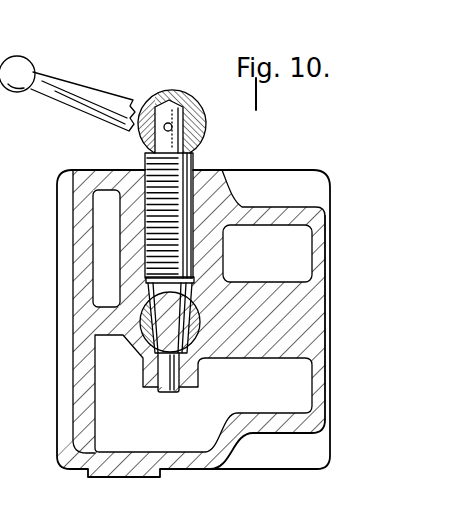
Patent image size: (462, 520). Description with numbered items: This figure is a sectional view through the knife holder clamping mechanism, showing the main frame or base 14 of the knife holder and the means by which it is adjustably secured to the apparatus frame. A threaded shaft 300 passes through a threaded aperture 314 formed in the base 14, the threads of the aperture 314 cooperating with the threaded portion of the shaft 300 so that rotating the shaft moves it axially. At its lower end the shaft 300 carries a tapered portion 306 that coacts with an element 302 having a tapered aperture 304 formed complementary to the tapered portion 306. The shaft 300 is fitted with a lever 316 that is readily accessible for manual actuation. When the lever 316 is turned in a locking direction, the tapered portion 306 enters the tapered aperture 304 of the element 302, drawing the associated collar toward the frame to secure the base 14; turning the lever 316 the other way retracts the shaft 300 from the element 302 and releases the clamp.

The main frame or base 14 is at (82, 335).
The threaded shaft 300 is at (195, 160).
The element 302 is at (132, 353).
The tapered aperture 304 is at (197, 320).
The tapered portion 306 is at (225, 278).
The threaded aperture 314 is at (223, 178).
The lever 316 is at (82, 92).